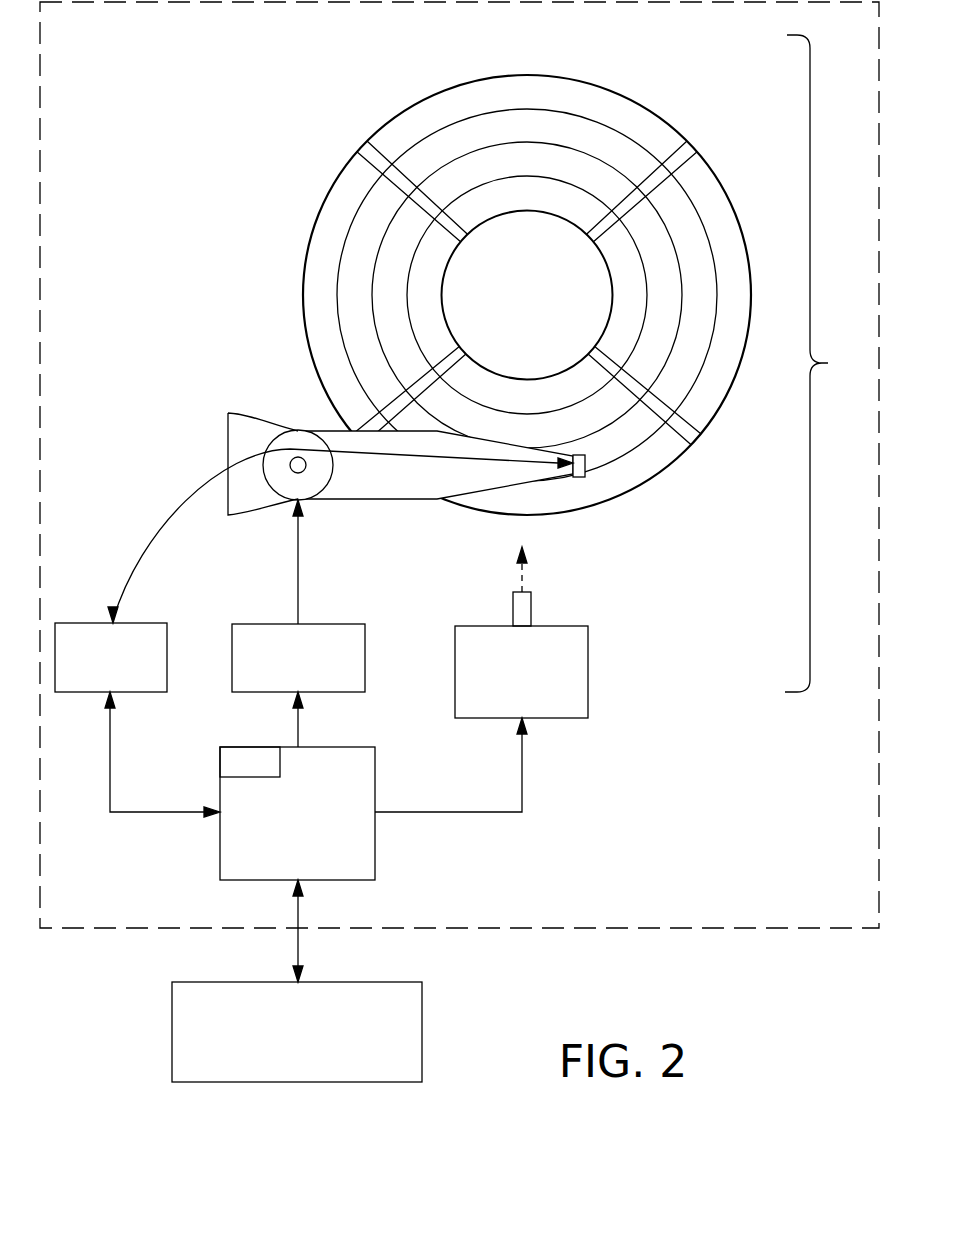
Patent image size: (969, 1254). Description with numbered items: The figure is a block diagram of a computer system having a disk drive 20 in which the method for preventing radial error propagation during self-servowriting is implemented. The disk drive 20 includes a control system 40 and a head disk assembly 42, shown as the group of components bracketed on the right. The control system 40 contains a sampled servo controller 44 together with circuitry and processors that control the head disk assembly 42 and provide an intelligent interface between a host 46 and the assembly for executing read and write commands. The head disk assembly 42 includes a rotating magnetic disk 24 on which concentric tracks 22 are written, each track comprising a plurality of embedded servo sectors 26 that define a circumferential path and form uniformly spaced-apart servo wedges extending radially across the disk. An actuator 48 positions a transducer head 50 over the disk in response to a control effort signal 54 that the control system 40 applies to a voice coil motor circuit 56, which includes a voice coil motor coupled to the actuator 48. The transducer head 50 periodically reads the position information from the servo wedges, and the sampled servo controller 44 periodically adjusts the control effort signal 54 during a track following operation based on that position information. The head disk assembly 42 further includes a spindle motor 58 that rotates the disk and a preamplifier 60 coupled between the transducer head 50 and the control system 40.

The disk drive 20 is at (758, 930).
The concentric tracks 22 is at (488, 295).
The magnetic disk 24 is at (406, 107).
The embedded servo sectors 26 is at (370, 158).
The control system 40 is at (286, 866).
The head disk assembly 42 is at (823, 363).
The sampled servo controller 44 is at (238, 774).
The host 46 is at (285, 1054).
The actuator 48 is at (379, 476).
The transducer head 50 is at (583, 477).
The control effort signal 54 is at (300, 728).
The voice coil motor circuit 56 is at (286, 682).
The spindle motor 58 is at (510, 711).
The preamplifier 60 is at (99, 682).